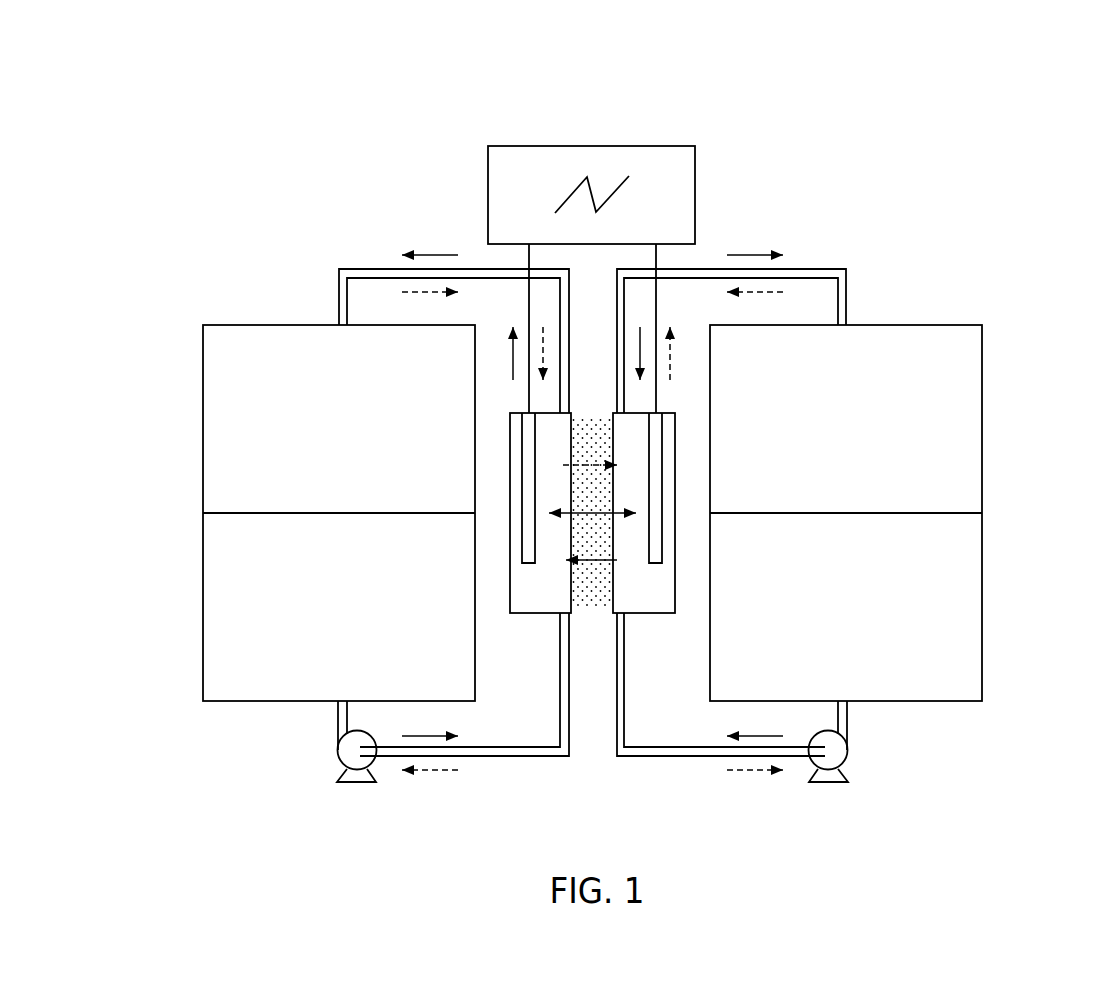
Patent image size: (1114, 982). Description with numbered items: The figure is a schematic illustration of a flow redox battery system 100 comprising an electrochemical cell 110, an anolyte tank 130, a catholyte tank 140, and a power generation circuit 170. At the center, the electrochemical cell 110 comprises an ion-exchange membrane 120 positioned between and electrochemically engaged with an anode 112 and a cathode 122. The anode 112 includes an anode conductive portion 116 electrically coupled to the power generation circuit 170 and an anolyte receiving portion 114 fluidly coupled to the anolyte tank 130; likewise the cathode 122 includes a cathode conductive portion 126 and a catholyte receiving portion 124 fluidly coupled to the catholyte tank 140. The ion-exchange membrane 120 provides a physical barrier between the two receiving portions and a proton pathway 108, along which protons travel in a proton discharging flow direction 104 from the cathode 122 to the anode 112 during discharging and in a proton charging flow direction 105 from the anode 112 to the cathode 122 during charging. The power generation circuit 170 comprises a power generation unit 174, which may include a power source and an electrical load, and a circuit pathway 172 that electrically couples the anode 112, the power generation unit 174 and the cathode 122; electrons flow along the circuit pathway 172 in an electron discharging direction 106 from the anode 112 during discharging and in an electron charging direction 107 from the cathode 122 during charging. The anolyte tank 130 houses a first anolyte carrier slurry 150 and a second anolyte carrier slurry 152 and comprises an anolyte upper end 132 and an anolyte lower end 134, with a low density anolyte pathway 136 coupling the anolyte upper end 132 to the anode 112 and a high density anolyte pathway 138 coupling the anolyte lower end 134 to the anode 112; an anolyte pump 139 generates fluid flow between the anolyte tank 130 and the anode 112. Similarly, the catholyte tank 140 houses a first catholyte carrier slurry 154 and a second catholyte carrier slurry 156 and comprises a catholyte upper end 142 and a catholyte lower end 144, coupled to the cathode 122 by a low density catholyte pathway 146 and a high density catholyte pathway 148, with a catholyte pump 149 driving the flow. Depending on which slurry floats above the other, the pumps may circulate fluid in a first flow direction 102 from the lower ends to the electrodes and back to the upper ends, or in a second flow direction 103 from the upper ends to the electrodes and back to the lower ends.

The flow redox battery system 100 is at (1053, 125).
The first flow direction 102 is at (420, 254).
The second flow direction 103 is at (417, 293).
The proton discharging flow direction 104 is at (597, 562).
The proton charging flow direction 105 is at (585, 464).
The electron discharging direction 106 is at (513, 356).
The electron charging direction 107 is at (543, 358).
The proton pathway 108 is at (597, 512).
The electrochemical cell 110 is at (593, 562).
The anode 112 is at (498, 564).
The anolyte receiving portion 114 is at (520, 614).
The anode conductive portion 116 is at (522, 553).
The ion-exchange membrane 120 is at (583, 614).
The cathode 122 is at (686, 564).
The catholyte receiving portion 124 is at (665, 614).
The cathode conductive portion 126 is at (663, 553).
The anolyte tank 130 is at (353, 524).
The anolyte upper end 132 is at (334, 466).
The anolyte lower end 134 is at (262, 757).
The low density anolyte pathway 136 is at (350, 269).
The high density anolyte pathway 138 is at (480, 758).
The anolyte pump 139 is at (357, 782).
The catholyte tank 140 is at (828, 524).
The catholyte upper end 142 is at (852, 463).
The catholyte lower end 144 is at (922, 757).
The low density catholyte pathway 146 is at (822, 269).
The high density catholyte pathway 148 is at (667, 758).
The catholyte pump 149 is at (835, 783).
The first anolyte carrier slurry 150 is at (212, 362).
The second anolyte carrier slurry 152 is at (217, 623).
The first catholyte carrier slurry 154 is at (968, 392).
The second catholyte carrier slurry 156 is at (968, 628).
The power generation circuit 170 is at (591, 228).
The circuit pathway 172 is at (528, 258).
The power generation unit 174 is at (652, 146).